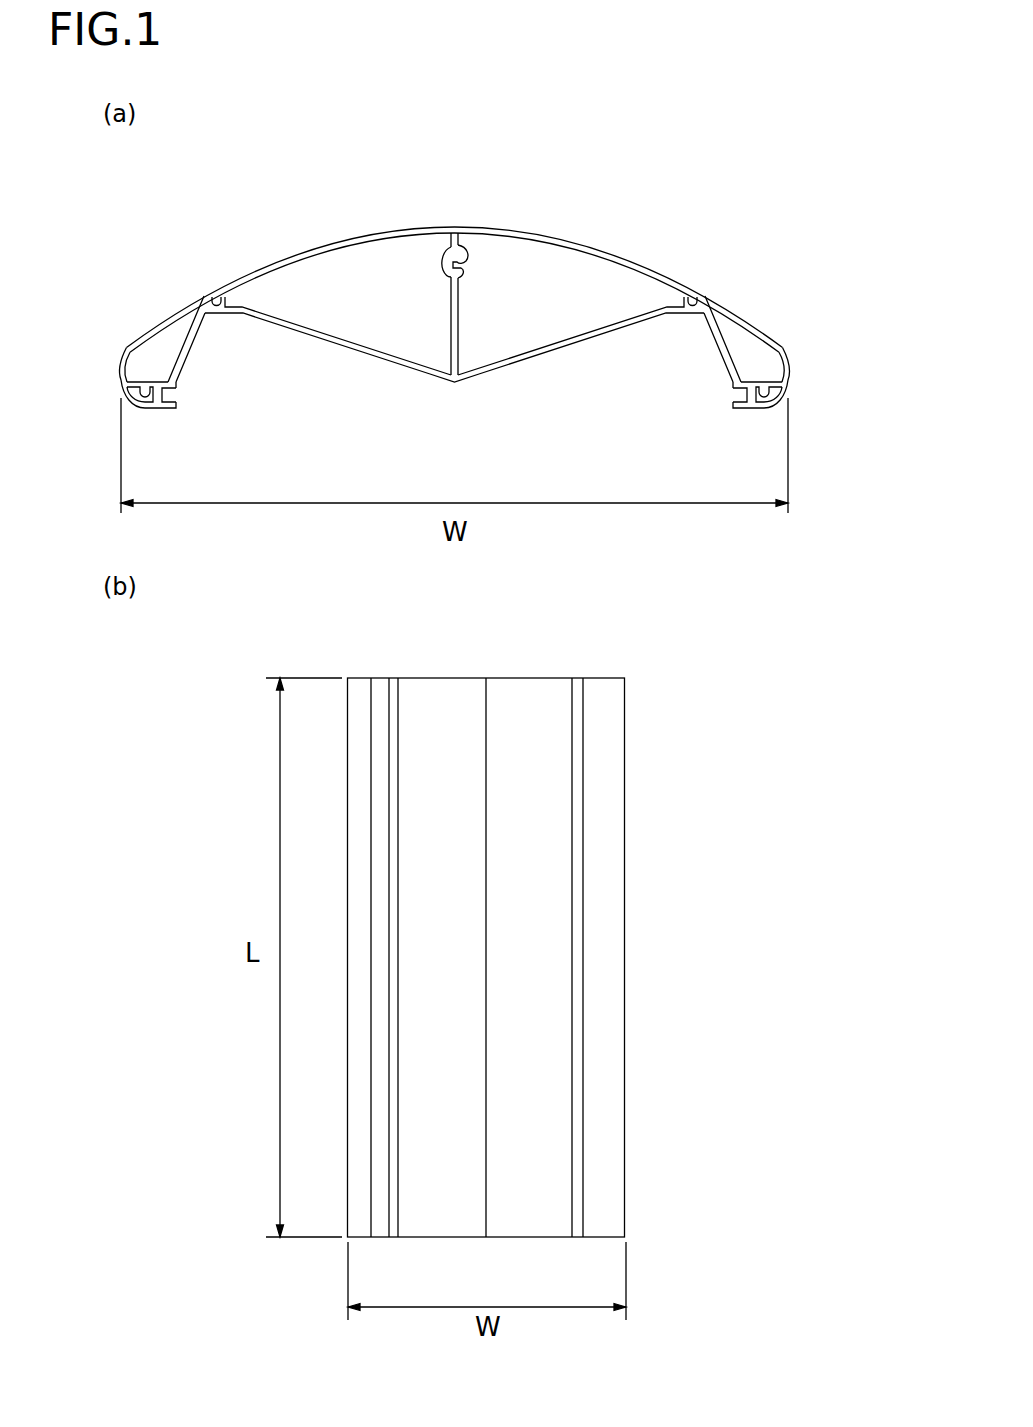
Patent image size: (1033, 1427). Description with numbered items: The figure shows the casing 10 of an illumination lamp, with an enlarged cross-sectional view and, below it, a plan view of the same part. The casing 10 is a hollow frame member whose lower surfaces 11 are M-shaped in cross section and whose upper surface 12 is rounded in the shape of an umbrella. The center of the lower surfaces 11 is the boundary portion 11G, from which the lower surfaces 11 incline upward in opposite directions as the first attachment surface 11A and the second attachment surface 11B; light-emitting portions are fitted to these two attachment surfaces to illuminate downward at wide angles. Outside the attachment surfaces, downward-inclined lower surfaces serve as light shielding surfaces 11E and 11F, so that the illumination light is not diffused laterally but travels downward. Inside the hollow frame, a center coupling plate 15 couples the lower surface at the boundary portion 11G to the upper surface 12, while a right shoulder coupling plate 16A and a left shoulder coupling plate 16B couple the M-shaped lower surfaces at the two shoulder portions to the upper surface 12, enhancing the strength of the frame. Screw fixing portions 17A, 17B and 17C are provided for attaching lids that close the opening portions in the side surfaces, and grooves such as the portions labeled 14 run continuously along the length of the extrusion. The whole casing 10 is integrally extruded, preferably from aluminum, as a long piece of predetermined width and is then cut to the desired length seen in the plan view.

The casing 10 is at (543, 143).
The lower surfaces 11 is at (454, 363).
The first attachment surface 11A is at (347, 348).
The second attachment surface 11B is at (562, 348).
The light shielding surface 11E is at (189, 352).
The light shielding surface 11F is at (720, 352).
The boundary portion 11G is at (454, 384).
The upper surface 12 is at (576, 244).
The engagement slot 14 is at (170, 396).
The center coupling plate 15 is at (450, 300).
The right shoulder coupling plate 16A is at (215, 296).
The left shoulder coupling plate 16B is at (692, 296).
The screw fixing portion 17A is at (463, 250).
The screw fixing portion 17B is at (144, 392).
The screw fixing portion 17C is at (764, 392).